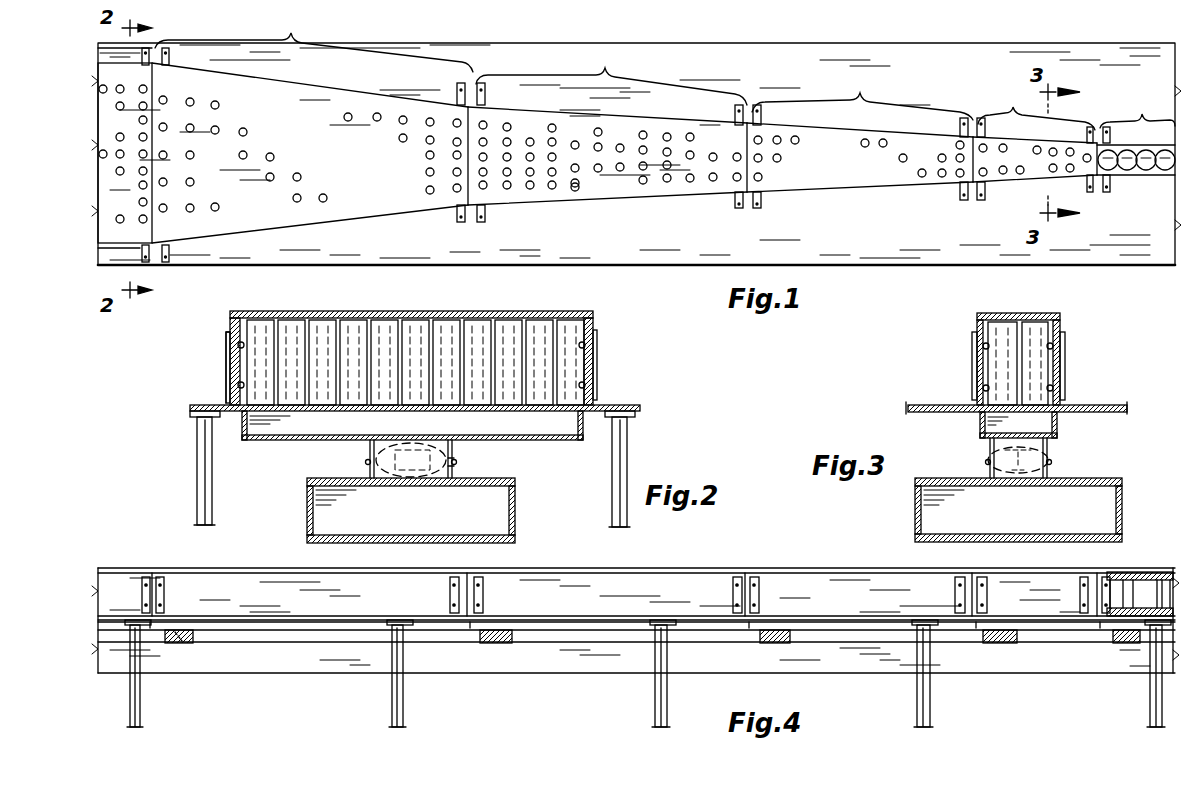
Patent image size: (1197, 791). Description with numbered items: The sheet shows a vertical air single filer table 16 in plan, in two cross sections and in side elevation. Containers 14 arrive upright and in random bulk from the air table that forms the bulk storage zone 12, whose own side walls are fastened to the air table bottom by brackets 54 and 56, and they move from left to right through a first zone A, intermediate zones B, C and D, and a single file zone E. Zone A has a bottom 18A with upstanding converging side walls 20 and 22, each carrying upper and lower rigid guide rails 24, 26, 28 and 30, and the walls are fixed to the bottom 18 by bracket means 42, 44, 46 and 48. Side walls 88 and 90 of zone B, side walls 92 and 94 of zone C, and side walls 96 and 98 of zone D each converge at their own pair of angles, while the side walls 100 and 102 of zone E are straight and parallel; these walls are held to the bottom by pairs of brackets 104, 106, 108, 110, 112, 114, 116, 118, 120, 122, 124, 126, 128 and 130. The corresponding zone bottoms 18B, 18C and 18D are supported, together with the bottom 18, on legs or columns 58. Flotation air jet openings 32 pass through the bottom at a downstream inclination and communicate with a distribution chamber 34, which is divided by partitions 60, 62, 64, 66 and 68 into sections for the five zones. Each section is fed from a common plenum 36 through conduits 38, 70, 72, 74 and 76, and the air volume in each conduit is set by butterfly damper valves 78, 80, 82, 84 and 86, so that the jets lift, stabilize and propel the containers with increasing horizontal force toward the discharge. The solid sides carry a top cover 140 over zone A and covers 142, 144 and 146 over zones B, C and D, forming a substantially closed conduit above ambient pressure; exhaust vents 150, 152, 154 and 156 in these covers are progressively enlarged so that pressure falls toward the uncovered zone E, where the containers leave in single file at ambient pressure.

In FIG. 1, the bulk storage zone 12 is at (125, 153).
In FIG. 2, the bulk storage zone 12 is at (466, 311).
In FIG. 3, the bulk storage zone 12 is at (1018, 359).
In FIG. 2, the containers 14 is at (375, 322).
In FIG. 3, the containers 14 is at (998, 330).
In FIG. 1, the filer table 16 is at (636, 154).
In FIG. 2, the bottom 18 is at (641, 409).
In FIG. 4, the bottom 18A is at (308, 618).
In FIG. 4, the support plate 18B is at (584, 618).
In FIG. 4, the support plate 18C is at (842, 618).
In FIG. 3, the support plate 18D is at (1108, 407).
In FIG. 4, the support plate 18D is at (1032, 622).
In FIG. 1, the side wall 20 is at (320, 88).
In FIG. 2, the side wall 20 is at (228, 322).
In FIG. 1, the side wall 22 is at (300, 226).
In FIG. 2, the side wall 22 is at (597, 319).
In FIG. 4, the side wall 22 is at (224, 582).
In FIG. 2, the upper rigid guide rail 24 is at (238, 346).
In FIG. 3, the upper rigid guide rail 24 is at (983, 346).
In FIG. 2, the lower rigid guide rail 26 is at (238, 386).
In FIG. 3, the lower rigid guide rail 26 is at (983, 388).
In FIG. 2, the upper rigid guide rail 28 is at (598, 345).
In FIG. 3, the upper rigid guide rail 28 is at (1064, 345).
In FIG. 4, the upper rigid guide rail 28 is at (1136, 572).
In FIG. 2, the lower rigid guide rail 30 is at (598, 386).
In FIG. 3, the lower rigid guide rail 30 is at (1064, 388).
In FIG. 4, the lower rigid guide rail 30 is at (1120, 606).
In FIG. 2, the flotation air jet openings 32 is at (300, 413).
In FIG. 3, the flotation air jet openings 32 is at (1018, 425).
In FIG. 2, the distribution chamber 34 is at (527, 448).
In FIG. 2, the plenum 36 is at (516, 504).
In FIG. 3, the plenum 36 is at (1122, 494).
In FIG. 4, the plenum 36 is at (283, 674).
In FIG. 2, the conduit 38 is at (458, 460).
In FIG. 4, the conduit 38 is at (196, 640).
In FIG. 1, the bracket means 42 is at (170, 52).
In FIG. 1, the bracket means 44 is at (456, 88).
In FIG. 1, the bracket means 46 is at (461, 223).
In FIG. 4, the bracket means 46 is at (450, 592).
In FIG. 1, the bracket means 48 is at (170, 250).
In FIG. 4, the bracket means 48 is at (165, 580).
In FIG. 1, the bracket 54 is at (145, 62).
In FIG. 2, the bracket 54 is at (226, 360).
In FIG. 1, the bracket 56 is at (148, 264).
In FIG. 2, the bracket 56 is at (598, 365).
In FIG. 4, the bracket 56 is at (142, 583).
In FIG. 2, the legs or columns 58 is at (196, 468).
In FIG. 4, the legs or columns 58 is at (142, 702).
In FIG. 4, the partition 60 is at (150, 628).
In FIG. 4, the partition 62 is at (470, 628).
In FIG. 4, the partition 64 is at (749, 628).
In FIG. 4, the partition 66 is at (976, 628).
In FIG. 4, the partition 68 is at (1100, 628).
In FIG. 4, the conduit 70 is at (512, 640).
In FIG. 4, the conduit 72 is at (792, 640).
In FIG. 4, the conduit 74 is at (1020, 644).
In FIG. 3, the conduit 76 is at (1049, 462).
In FIG. 4, the conduit 76 is at (1140, 644).
In FIG. 2, the butterfly damper valve 78 is at (366, 462).
In FIG. 4, the butterfly damper valve 78 is at (177, 643).
In FIG. 4, the butterfly damper valve 80 is at (490, 643).
In FIG. 4, the butterfly damper valve 82 is at (772, 643).
In FIG. 4, the butterfly damper valve 84 is at (990, 643).
In FIG. 3, the butterfly damper valve 86 is at (1050, 455).
In FIG. 4, the butterfly damper valve 86 is at (1122, 643).
In FIG. 1, the side wall 88 is at (602, 113).
In FIG. 1, the side wall 90 is at (624, 203).
In FIG. 4, the side wall 90 is at (576, 586).
In FIG. 1, the side wall 92 is at (848, 128).
In FIG. 1, the side wall 94 is at (834, 192).
In FIG. 4, the side wall 94 is at (874, 578).
In FIG. 1, the side wall 96 is at (1006, 134).
In FIG. 3, the side wall 96 is at (975, 323).
In FIG. 1, the side wall 98 is at (996, 186).
In FIG. 3, the side wall 98 is at (1066, 323).
In FIG. 4, the side wall 98 is at (1000, 580).
In FIG. 1, the side wall 100 is at (1140, 138).
In FIG. 1, the side wall 102 is at (1134, 177).
In FIG. 1, the bracket 104 is at (487, 94).
In FIG. 1, the bracket 106 is at (733, 110).
In FIG. 1, the bracket 108 is at (486, 222).
In FIG. 4, the bracket 108 is at (484, 592).
In FIG. 1, the bracket 110 is at (736, 208).
In FIG. 4, the bracket 110 is at (735, 578).
In FIG. 1, the bracket 112 is at (763, 110).
In FIG. 1, the bracket 114 is at (958, 118).
In FIG. 1, the bracket 116 is at (762, 206).
In FIG. 4, the bracket 116 is at (760, 580).
In FIG. 1, the bracket 118 is at (962, 200).
In FIG. 4, the bracket 118 is at (956, 584).
In FIG. 1, the bracket 120 is at (982, 118).
In FIG. 1, the bracket 122 is at (1085, 130).
In FIG. 3, the bracket 122 is at (972, 358).
In FIG. 1, the bracket 124 is at (981, 202).
In FIG. 4, the bracket 124 is at (988, 592).
In FIG. 1, the bracket 126 is at (1090, 194).
In FIG. 3, the bracket 126 is at (1066, 362).
In FIG. 4, the bracket 126 is at (1084, 580).
In FIG. 1, the bracket 128 is at (1106, 126).
In FIG. 1, the bracket 130 is at (1108, 193).
In FIG. 4, the bracket 130 is at (1107, 582).
In FIG. 1, the top cover 140 is at (384, 212).
In FIG. 4, the top cover 140 is at (296, 578).
In FIG. 1, the cover 142 is at (672, 184).
In FIG. 4, the cover 142 is at (652, 574).
In FIG. 1, the cover 144 is at (868, 188).
In FIG. 4, the cover 144 is at (846, 580).
In FIG. 1, the cover 146 is at (1046, 177).
In FIG. 3, the cover 146 is at (1017, 314).
In FIG. 4, the cover 146 is at (1060, 570).
In FIG. 1, the exhaust vents 150 is at (348, 121).
In FIG. 1, the exhaust vents 152 is at (576, 191).
In FIG. 1, the exhaust vents 154 is at (798, 144).
In FIG. 1, the exhaust vents 156 is at (1013, 181).
In FIG. 3, the exhaust vents 156 is at (1038, 314).
In FIG. 1, the first zone A is at (314, 44).
In FIG. 1, the zone B is at (611, 79).
In FIG. 1, the zone C is at (862, 97).
In FIG. 1, the zone D is at (1036, 106).
In FIG. 1, the single file zone E is at (1137, 109).